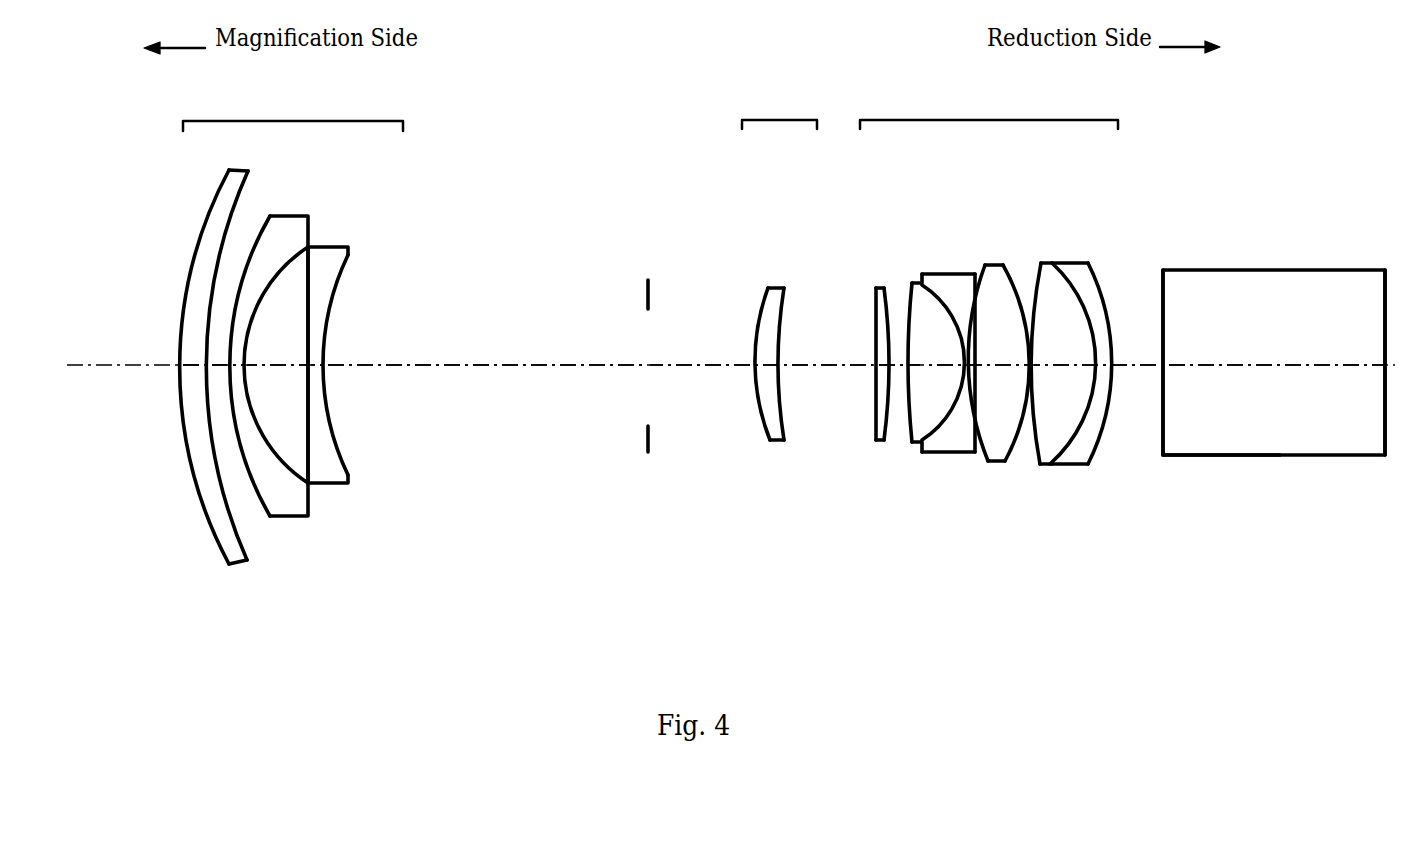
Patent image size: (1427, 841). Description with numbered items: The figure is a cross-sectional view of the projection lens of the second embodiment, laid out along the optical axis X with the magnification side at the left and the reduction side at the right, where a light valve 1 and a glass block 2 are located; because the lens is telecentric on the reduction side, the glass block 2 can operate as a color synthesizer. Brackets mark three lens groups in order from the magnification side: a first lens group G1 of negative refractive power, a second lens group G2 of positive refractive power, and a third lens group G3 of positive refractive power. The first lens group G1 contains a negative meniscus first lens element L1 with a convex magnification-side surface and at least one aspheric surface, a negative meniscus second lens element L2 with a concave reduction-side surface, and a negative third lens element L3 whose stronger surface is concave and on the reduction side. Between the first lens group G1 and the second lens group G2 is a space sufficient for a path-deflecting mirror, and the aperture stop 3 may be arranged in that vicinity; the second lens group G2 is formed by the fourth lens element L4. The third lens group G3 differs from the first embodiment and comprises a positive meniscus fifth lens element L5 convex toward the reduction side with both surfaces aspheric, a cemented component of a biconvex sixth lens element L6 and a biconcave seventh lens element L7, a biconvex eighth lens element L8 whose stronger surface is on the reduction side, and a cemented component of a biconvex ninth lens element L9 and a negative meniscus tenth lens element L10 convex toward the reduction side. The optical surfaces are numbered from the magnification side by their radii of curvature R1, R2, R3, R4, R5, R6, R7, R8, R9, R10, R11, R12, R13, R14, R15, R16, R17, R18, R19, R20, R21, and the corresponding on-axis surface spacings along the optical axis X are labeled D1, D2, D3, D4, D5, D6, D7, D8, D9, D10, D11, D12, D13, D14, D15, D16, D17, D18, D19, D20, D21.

The first lens group G1 is at (293, 105).
The second lens group G2 is at (779, 104).
The third lens group G3 is at (989, 104).
The optical axis X is at (100, 367).
The aperture stop 3 is at (624, 367).
The glass block 2 is at (1228, 456).
The light valve 1 is at (1287, 367).
The first lens element L1 is at (200, 375).
The second lens element L2 is at (283, 379).
The third lens element L3 is at (357, 404).
The fourth lens element L4 is at (771, 382).
The fifth lens element L5 is at (858, 365).
The sixth lens element L6 is at (928, 370).
The seventh lens element L7 is at (965, 439).
The eighth lens element L8 is at (993, 376).
The ninth lens element L9 is at (1058, 358).
The tenth lens element L10 is at (1097, 356).
The radius of curvature of first optical surface R1 is at (197, 252).
The radius of curvature of second optical surface R2 is at (236, 224).
The radius of curvature of third optical surface R3 is at (246, 272).
The radius of curvature of fourth optical surface R4 is at (277, 277).
The radius of curvature of fifth optical surface R5 is at (310, 378).
The radius of curvature of sixth optical surface R6 is at (332, 300).
The radius of curvature of seventh optical surface R7 is at (648, 296).
The radius of curvature of eighth optical surface R8 is at (759, 325).
The radius of curvature of ninth optical surface R9 is at (781, 310).
The radius of curvature of tenth optical surface R10 is at (875, 322).
The radius of curvature of eleventh optical surface R11 is at (884, 289).
The radius of curvature of twelfth optical surface R12 is at (912, 300).
The radius of curvature of thirteenth optical surface R13 is at (928, 292).
The radius of curvature of fourteenth optical surface R14 is at (998, 454).
The radius of curvature of fifteenth optical surface R15 is at (986, 265).
The radius of curvature of sixteenth optical surface R16 is at (1015, 292).
The radius of curvature of seventeenth optical surface R17 is at (1033, 285).
The radius of curvature of eighteenth optical surface R18 is at (1056, 262).
The radius of curvature of nineteenth optical surface R19 is at (1093, 272).
The radius of curvature of twentieth optical surface R20 is at (1163, 300).
The radius of curvature of twenty-first optical surface R21 is at (1385, 300).
The first on-axis surface spacing D1 is at (177, 359).
The second on-axis surface spacing D2 is at (199, 388).
The third on-axis surface spacing D3 is at (242, 371).
The fourth on-axis surface spacing D4 is at (256, 363).
The fifth on-axis surface spacing D5 is at (330, 361).
The sixth on-axis surface spacing D6 is at (425, 363).
The seventh on-axis surface spacing D7 is at (716, 372).
The eighth on-axis surface spacing D8 is at (755, 363).
The ninth on-axis surface spacing D9 is at (796, 370).
The tenth on-axis surface spacing D10 is at (876, 372).
The eleventh on-axis surface spacing D11 is at (878, 358).
The twelfth on-axis surface spacing D12 is at (932, 363).
The thirteenth on-axis surface spacing D13 is at (964, 372).
The fourteenth on-axis surface spacing D14 is at (971, 370).
The fifteenth on-axis surface spacing D15 is at (1000, 363).
The sixteenth on-axis surface spacing D16 is at (1040, 364).
The seventeenth on-axis surface spacing D17 is at (1068, 370).
The eighteenth on-axis surface spacing D18 is at (1112, 372).
The nineteenth on-axis surface spacing D19 is at (1125, 364).
The twentieth on-axis surface spacing D20 is at (1262, 368).
The twenty-first on-axis surface spacing D21 is at (1380, 368).